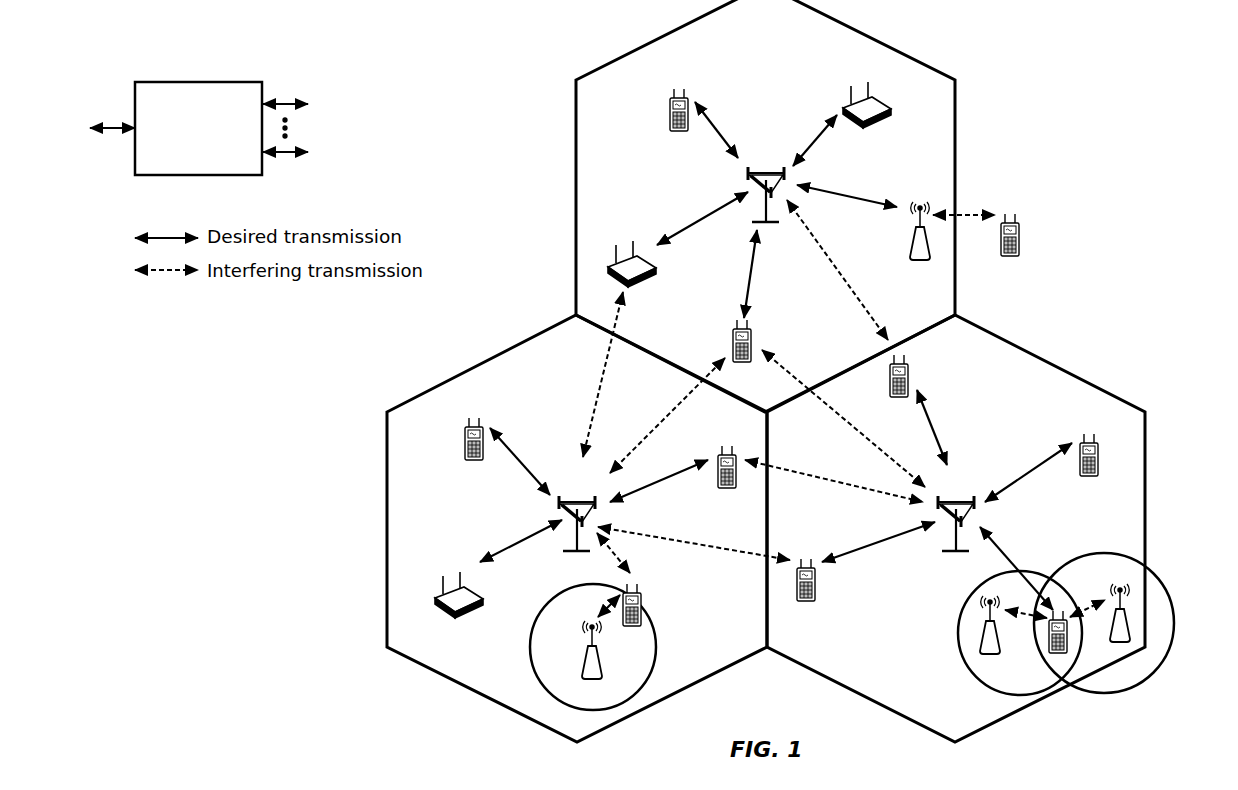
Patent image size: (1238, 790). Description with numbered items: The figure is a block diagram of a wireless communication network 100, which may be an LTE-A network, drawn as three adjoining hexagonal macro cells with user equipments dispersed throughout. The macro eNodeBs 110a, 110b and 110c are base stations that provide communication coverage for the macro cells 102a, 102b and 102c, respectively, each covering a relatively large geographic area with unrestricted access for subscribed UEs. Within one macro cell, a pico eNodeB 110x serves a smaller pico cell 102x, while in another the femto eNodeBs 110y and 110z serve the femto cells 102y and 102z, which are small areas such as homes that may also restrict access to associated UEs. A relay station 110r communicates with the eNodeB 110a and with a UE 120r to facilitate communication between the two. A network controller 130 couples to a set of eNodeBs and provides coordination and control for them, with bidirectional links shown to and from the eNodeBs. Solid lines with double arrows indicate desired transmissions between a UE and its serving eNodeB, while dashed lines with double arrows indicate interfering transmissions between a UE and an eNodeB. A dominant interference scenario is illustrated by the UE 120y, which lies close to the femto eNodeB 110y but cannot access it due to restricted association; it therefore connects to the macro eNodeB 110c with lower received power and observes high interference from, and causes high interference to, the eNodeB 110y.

The wireless communication network 100 is at (1086, 45).
The macro cell 102a is at (861, 30).
The macro cell 102b is at (481, 362).
The macro cell 102c is at (1062, 351).
The pico cell 102x is at (550, 601).
The femto cell 102y is at (962, 598).
The femto cell 102z is at (1102, 553).
The macro eNodeB 110a is at (770, 158).
The macro eNodeB 110b is at (583, 486).
The macro eNodeB 110c is at (962, 487).
The relay station 110r is at (905, 242).
The pico eNodeB 110x is at (600, 668).
The femto eNodeB 110y is at (1006, 662).
The femto eNodeB 110z is at (1130, 633).
The UE 120r is at (1019, 244).
The UE 120y is at (1047, 650).
The network controller 130 is at (194, 79).